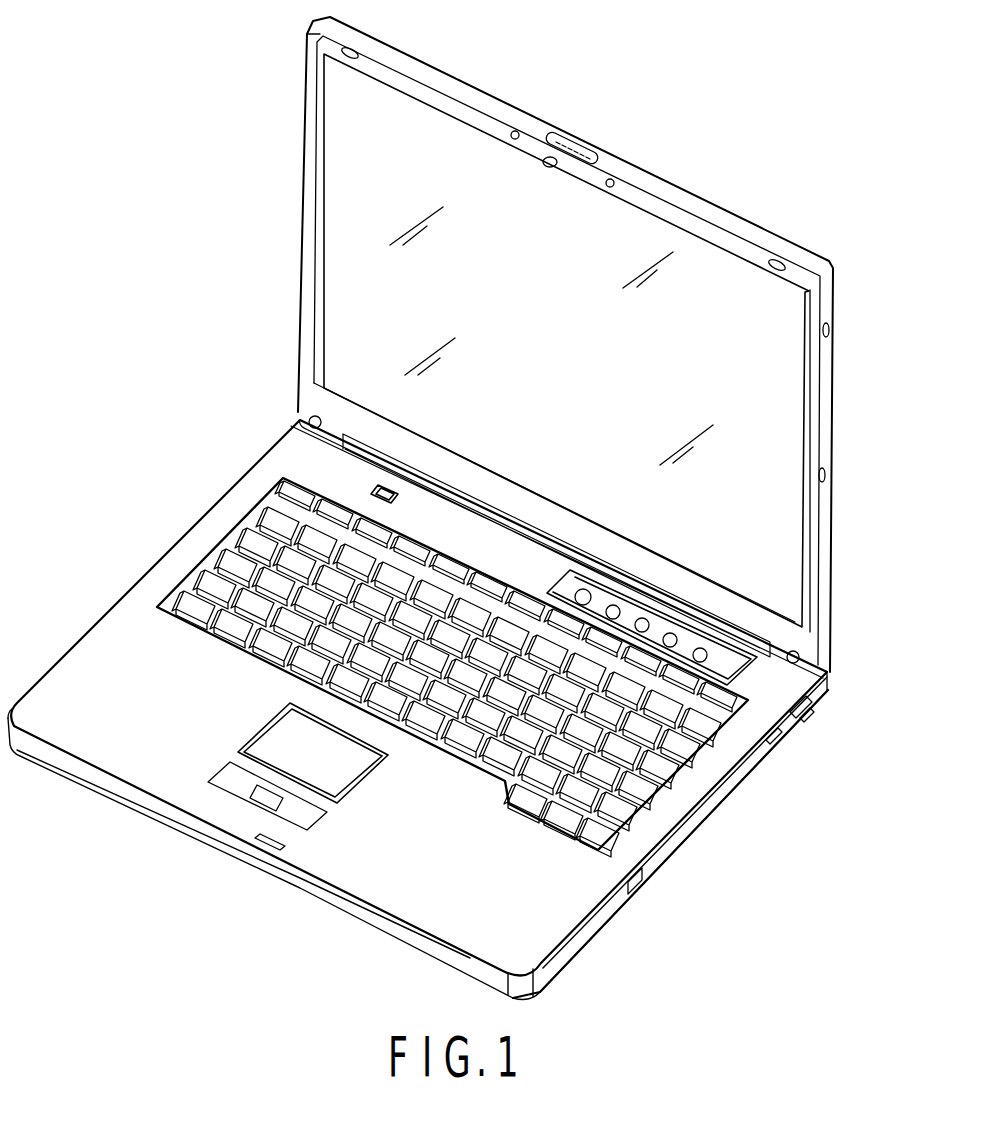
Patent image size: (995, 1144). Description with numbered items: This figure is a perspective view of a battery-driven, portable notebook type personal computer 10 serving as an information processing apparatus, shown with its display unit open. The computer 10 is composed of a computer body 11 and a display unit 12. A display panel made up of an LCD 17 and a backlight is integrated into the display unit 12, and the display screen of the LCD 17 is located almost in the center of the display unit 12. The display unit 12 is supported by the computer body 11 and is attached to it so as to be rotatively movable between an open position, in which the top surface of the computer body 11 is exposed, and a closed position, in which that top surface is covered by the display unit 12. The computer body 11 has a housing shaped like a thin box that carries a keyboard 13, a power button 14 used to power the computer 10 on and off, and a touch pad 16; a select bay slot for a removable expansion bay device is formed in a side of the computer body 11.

The notebook type personal computer 10 is at (454, 508).
The computer body 11 is at (753, 760).
The display unit 12 is at (598, 344).
The keyboard 13 is at (657, 797).
The power button 14 is at (375, 483).
The touch pad 16 is at (277, 752).
The LCD 17 is at (777, 367).